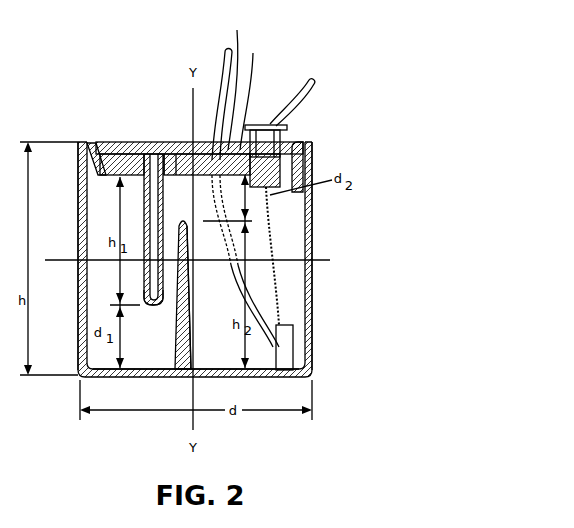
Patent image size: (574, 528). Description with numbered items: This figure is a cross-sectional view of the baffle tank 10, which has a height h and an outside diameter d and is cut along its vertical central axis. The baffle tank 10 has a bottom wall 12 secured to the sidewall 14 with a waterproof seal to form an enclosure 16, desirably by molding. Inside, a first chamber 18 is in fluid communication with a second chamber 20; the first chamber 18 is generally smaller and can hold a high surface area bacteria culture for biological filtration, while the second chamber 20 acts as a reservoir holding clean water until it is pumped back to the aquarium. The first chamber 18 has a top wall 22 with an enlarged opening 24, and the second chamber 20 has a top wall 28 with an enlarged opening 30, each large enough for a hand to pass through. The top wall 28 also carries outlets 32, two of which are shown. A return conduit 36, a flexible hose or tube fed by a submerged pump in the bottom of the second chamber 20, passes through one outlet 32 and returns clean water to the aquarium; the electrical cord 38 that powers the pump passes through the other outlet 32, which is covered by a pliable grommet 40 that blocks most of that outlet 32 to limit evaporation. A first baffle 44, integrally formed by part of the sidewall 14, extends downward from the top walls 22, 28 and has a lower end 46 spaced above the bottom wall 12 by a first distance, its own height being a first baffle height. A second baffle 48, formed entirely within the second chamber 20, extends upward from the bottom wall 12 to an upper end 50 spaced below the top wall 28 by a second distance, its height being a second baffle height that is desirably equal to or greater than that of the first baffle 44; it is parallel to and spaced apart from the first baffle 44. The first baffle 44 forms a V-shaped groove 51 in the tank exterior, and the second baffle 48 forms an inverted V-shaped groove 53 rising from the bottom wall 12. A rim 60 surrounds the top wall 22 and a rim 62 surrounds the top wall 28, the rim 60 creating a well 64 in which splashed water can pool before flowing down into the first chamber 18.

The baffle tank 10 is at (372, 66).
The bottom wall 12 is at (267, 378).
The sidewall 14 is at (313, 300).
The enclosure 16 is at (68, 165).
The first chamber 18 is at (95, 223).
The second chamber 20 is at (292, 222).
The top wall 22 is at (128, 160).
The enlarged opening 24 is at (136, 170).
The top wall 28 is at (178, 172).
The enlarged opening 30 is at (213, 165).
The outlet 32 is at (243, 112).
The return conduit 36 is at (254, 302).
The electrical cord 38 is at (222, 53).
The grommet 40 is at (298, 125).
The first baffle 44 is at (144, 225).
The lower end 46 is at (151, 306).
The second baffle 48 is at (194, 292).
The upper end 50 is at (230, 216).
The V-shaped groove 51 is at (155, 160).
The inverted V-shaped groove 53 is at (180, 385).
The rim 60 is at (82, 138).
The rim 62 is at (300, 146).
The well 64 is at (100, 145).